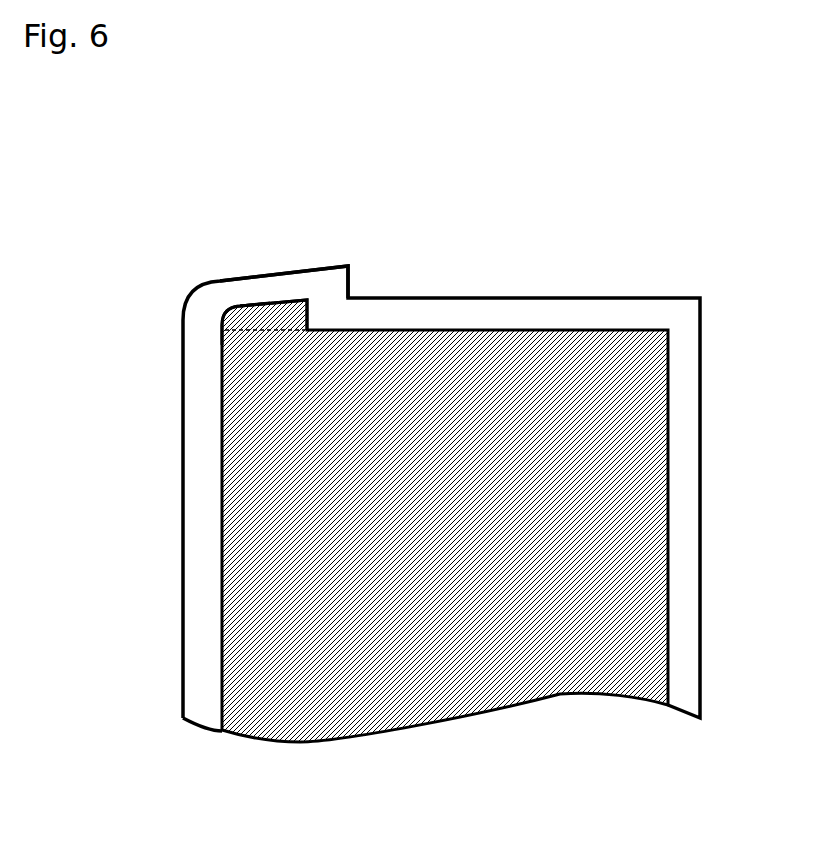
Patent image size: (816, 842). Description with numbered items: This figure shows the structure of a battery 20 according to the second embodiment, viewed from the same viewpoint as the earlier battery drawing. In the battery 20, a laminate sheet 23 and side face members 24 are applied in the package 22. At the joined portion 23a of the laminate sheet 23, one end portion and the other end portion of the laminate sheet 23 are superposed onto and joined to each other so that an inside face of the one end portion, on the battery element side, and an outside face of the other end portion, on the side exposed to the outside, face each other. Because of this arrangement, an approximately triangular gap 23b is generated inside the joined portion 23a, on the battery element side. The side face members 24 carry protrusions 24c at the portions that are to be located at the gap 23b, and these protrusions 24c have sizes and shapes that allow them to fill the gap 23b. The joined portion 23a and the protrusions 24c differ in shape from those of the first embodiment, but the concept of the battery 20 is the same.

The battery 20 is at (435, 442).
The package 22 is at (435, 479).
The laminate sheet 23 is at (465, 451).
The joined portion 23a is at (327, 242).
The gap 23b is at (276, 305).
The side face member 24 is at (395, 555).
The protrusion 24c is at (218, 351).